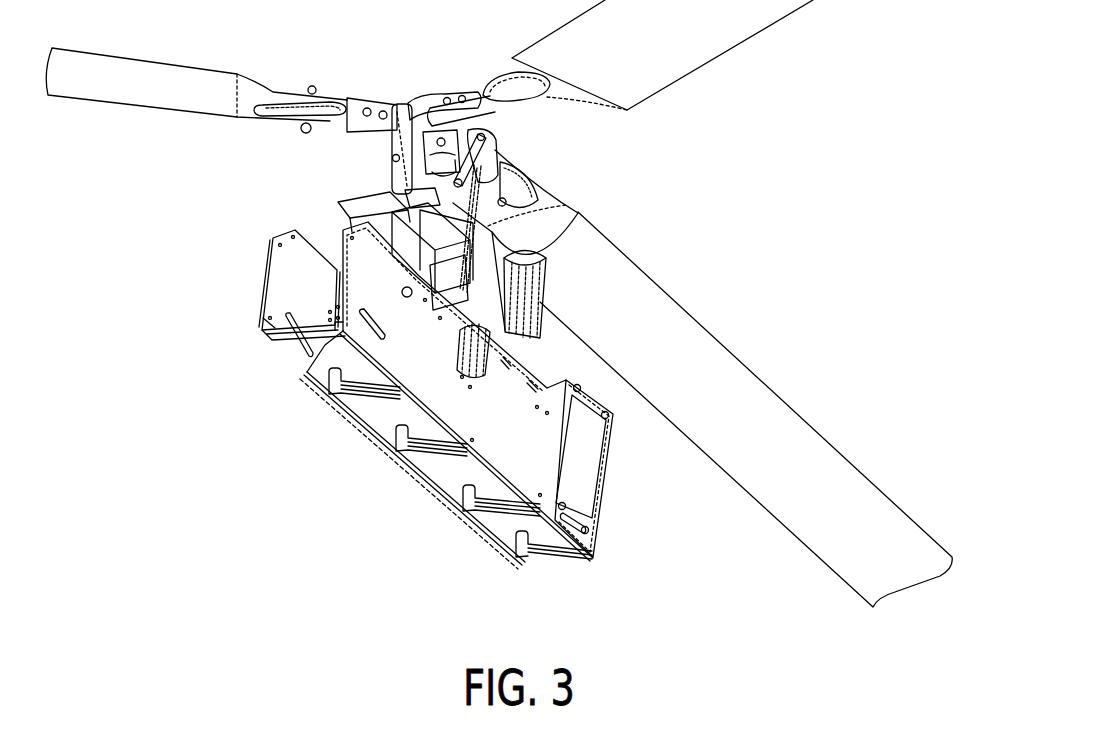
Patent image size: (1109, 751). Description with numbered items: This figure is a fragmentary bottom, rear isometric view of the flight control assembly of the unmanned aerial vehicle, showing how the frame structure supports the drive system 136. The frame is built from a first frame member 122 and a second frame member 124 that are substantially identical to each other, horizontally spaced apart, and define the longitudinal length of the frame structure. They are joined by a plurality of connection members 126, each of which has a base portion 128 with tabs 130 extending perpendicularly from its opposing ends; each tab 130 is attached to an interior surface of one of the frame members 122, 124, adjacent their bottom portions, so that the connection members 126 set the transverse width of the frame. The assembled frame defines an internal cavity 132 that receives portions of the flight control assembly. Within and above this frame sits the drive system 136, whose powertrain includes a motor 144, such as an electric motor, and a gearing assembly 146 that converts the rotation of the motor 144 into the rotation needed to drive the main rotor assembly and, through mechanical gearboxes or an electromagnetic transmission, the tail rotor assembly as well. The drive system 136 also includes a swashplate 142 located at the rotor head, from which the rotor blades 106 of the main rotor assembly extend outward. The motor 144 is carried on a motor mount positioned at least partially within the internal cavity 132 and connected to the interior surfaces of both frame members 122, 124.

The rotor blade 106 is at (743, 23).
The first frame member 122 is at (287, 257).
The second frame member 124 is at (517, 477).
The connection members 126 is at (420, 447).
The base portion 128 is at (367, 390).
The tabs 130 is at (333, 382).
The internal cavity 132 is at (463, 463).
The drive system 136 is at (467, 98).
The swashplate 142 is at (413, 143).
The motor 144 is at (533, 255).
The gearing assembly 146 is at (505, 347).